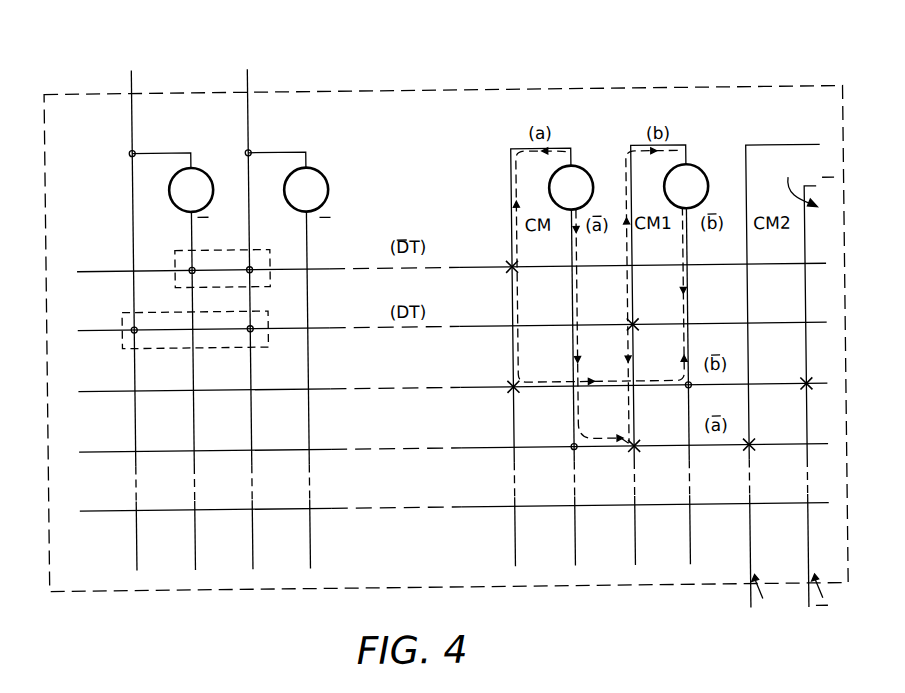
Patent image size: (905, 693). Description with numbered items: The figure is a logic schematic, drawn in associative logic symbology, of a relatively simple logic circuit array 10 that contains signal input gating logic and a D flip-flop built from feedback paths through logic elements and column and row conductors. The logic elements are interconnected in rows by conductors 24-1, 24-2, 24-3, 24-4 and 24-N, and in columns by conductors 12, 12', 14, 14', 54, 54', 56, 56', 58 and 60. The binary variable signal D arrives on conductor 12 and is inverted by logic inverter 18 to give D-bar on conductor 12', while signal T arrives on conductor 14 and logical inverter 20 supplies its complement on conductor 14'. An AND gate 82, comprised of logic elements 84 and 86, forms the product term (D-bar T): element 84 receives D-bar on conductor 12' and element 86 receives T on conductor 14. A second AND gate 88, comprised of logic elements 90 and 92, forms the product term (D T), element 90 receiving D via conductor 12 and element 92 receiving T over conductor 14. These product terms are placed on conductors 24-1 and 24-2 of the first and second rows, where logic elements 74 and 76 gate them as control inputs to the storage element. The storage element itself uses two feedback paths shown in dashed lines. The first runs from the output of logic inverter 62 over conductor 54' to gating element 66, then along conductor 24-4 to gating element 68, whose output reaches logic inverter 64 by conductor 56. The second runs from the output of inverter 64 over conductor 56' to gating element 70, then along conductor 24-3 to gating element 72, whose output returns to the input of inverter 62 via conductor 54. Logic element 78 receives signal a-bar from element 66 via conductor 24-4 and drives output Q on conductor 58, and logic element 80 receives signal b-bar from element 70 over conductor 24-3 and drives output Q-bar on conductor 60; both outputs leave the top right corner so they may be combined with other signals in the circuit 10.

The logic circuit array 10 is at (849, 310).
The conductor 12 is at (145, 310).
The input conductor 14 is at (264, 308).
The logic inverter 18 is at (208, 167).
The logical inverter 20 is at (328, 178).
The conductor 12' is at (186, 391).
The conductor 14' is at (311, 390).
The conductor 24-1 is at (752, 266).
The conductor 24-2 is at (781, 324).
The conductor 24-3 is at (781, 385).
The conductor 24-4 is at (782, 445).
The conductor 24-N is at (787, 505).
The conductor 54 is at (525, 357).
The conductor 54' is at (601, 387).
The conductor 56 is at (647, 339).
The conductor 56' is at (714, 386).
The conductor 58 is at (747, 172).
The conductor 60 is at (810, 242).
The logic inverter 62 is at (591, 173).
The logic inverter 64 is at (711, 182).
The gating element 66 is at (572, 451).
The gating element 68 is at (636, 452).
The gating element 70 is at (687, 391).
The gating element 72 is at (512, 391).
The logic element 74 is at (512, 272).
The logic element 76 is at (634, 324).
The logic element 78 is at (746, 451).
The logic element 80 is at (809, 392).
The AND gate 82 is at (271, 284).
The logic element 84 is at (191, 267).
The logic element 86 is at (253, 267).
The AND gate 88 is at (270, 345).
The logic element 90 is at (136, 330).
The logic element 92 is at (250, 328).